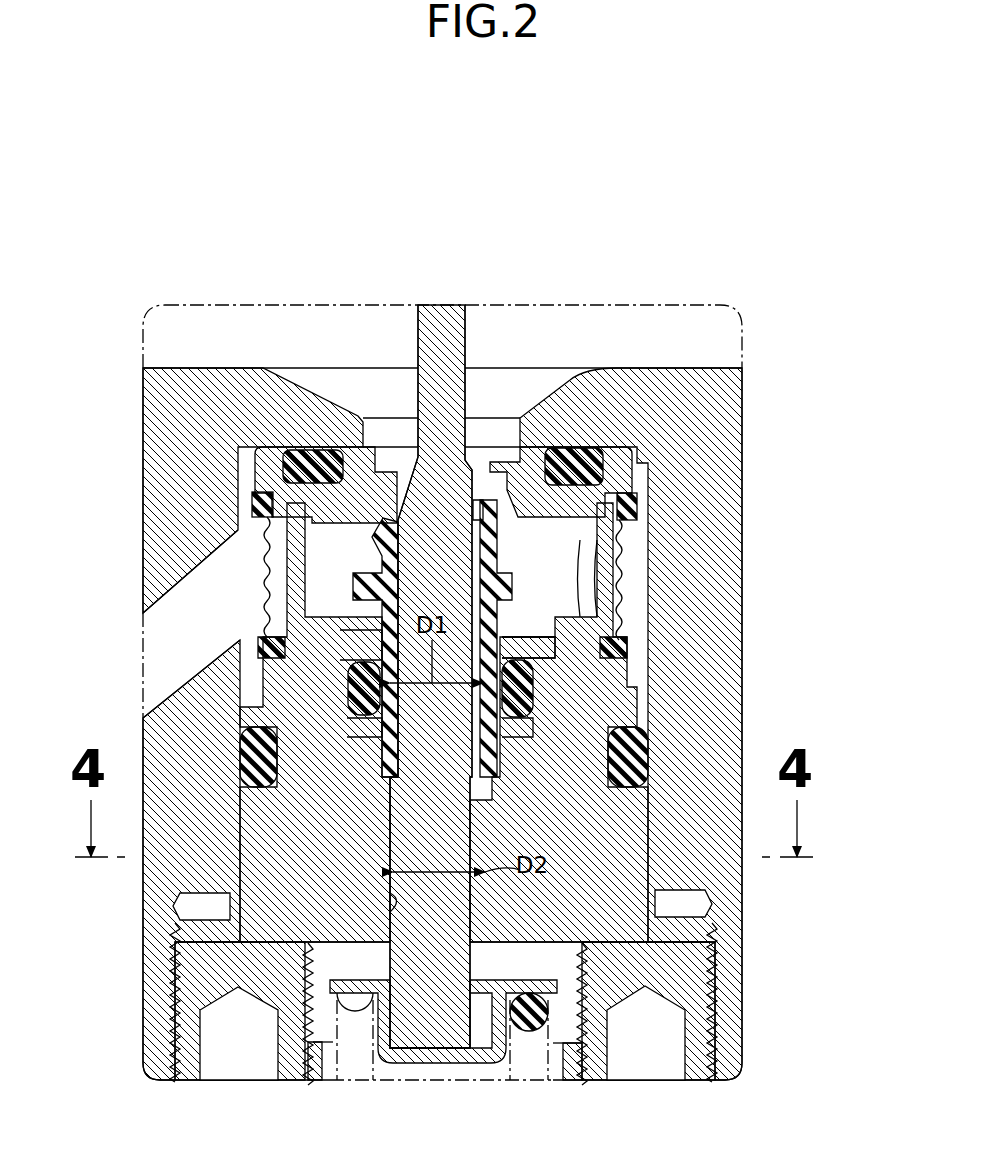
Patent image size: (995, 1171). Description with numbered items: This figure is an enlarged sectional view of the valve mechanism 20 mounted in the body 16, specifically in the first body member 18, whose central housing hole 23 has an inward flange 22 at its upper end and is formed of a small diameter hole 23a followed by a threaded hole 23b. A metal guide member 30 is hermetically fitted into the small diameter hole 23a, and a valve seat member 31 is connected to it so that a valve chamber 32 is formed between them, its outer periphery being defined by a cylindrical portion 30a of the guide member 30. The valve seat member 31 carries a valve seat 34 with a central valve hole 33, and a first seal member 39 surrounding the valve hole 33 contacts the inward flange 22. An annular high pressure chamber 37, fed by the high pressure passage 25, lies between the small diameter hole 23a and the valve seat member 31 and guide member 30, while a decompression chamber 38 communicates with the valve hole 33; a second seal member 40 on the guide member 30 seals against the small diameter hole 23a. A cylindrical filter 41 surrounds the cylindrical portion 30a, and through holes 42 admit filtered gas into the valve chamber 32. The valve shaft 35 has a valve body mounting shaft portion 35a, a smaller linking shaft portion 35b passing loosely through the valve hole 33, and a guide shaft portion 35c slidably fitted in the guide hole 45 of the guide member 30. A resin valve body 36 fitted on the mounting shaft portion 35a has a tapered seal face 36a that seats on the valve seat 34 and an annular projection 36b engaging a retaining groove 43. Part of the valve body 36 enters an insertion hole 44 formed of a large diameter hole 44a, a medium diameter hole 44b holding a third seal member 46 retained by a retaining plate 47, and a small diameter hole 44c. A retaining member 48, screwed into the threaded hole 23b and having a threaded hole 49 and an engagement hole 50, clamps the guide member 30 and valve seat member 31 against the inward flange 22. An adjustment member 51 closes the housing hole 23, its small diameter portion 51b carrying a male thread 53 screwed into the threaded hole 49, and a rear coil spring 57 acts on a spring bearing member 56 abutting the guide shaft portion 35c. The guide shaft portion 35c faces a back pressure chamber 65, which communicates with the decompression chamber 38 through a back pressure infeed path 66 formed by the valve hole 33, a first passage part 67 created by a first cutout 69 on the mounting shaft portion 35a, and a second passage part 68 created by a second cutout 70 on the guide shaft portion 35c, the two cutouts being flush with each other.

The body 16 is at (757, 892).
The first body member 18 is at (722, 660).
The valve mechanism 20 is at (395, 443).
The inward flange 22 is at (555, 412).
The housing hole 23 is at (645, 622).
The small diameter hole 23a is at (650, 560).
The threaded hole 23b is at (693, 990).
The high pressure passage 25 is at (168, 593).
The guide member 30 is at (258, 852).
The cylindrical portion 30a is at (262, 508).
The valve seat member 31 is at (625, 452).
The valve chamber 32 is at (531, 565).
The valve hole 33 is at (503, 477).
The valve seat 34 is at (434, 549).
The valve shaft 35 is at (473, 337).
The valve body mounting shaft portion 35a is at (487, 750).
The linking shaft portion 35b is at (433, 312).
The guide shaft portion 35c is at (438, 1063).
The valve body 36 is at (373, 550).
The tapered seal face 36a is at (540, 415).
The annular projection 36b is at (465, 512).
The high pressure chamber 37 is at (250, 565).
The decompression chamber 38 is at (442, 329).
The first seal member 39 is at (318, 470).
The second seal member 40 is at (262, 768).
The filter 41 is at (627, 510).
The through holes 42 is at (298, 580).
The retaining groove 43 is at (441, 375).
The insertion hole 44 is at (352, 628).
The large diameter hole 44a is at (548, 650).
The medium diameter hole 44b is at (348, 696).
The small diameter hole 44c is at (360, 790).
The guide hole 45 is at (390, 905).
The third seal member 46 is at (522, 693).
The retaining plate 47 is at (517, 640).
The retaining member 48 is at (192, 983).
The threaded hole 49 is at (607, 1035).
The engagement hole 50 is at (277, 1047).
The adjustment member 51 is at (320, 1038).
The small diameter portion 51b is at (566, 1057).
The male thread 53 is at (596, 1060).
The spring bearing member 56 is at (397, 1057).
The rear coil spring 57 is at (535, 1028).
The back pressure chamber 65 is at (527, 982).
The back pressure infeed path 66 is at (483, 816).
The first passage part 67 is at (477, 708).
The second passage part 68 is at (482, 900).
The first cutout 69 is at (473, 793).
The second cutout 70 is at (468, 946).